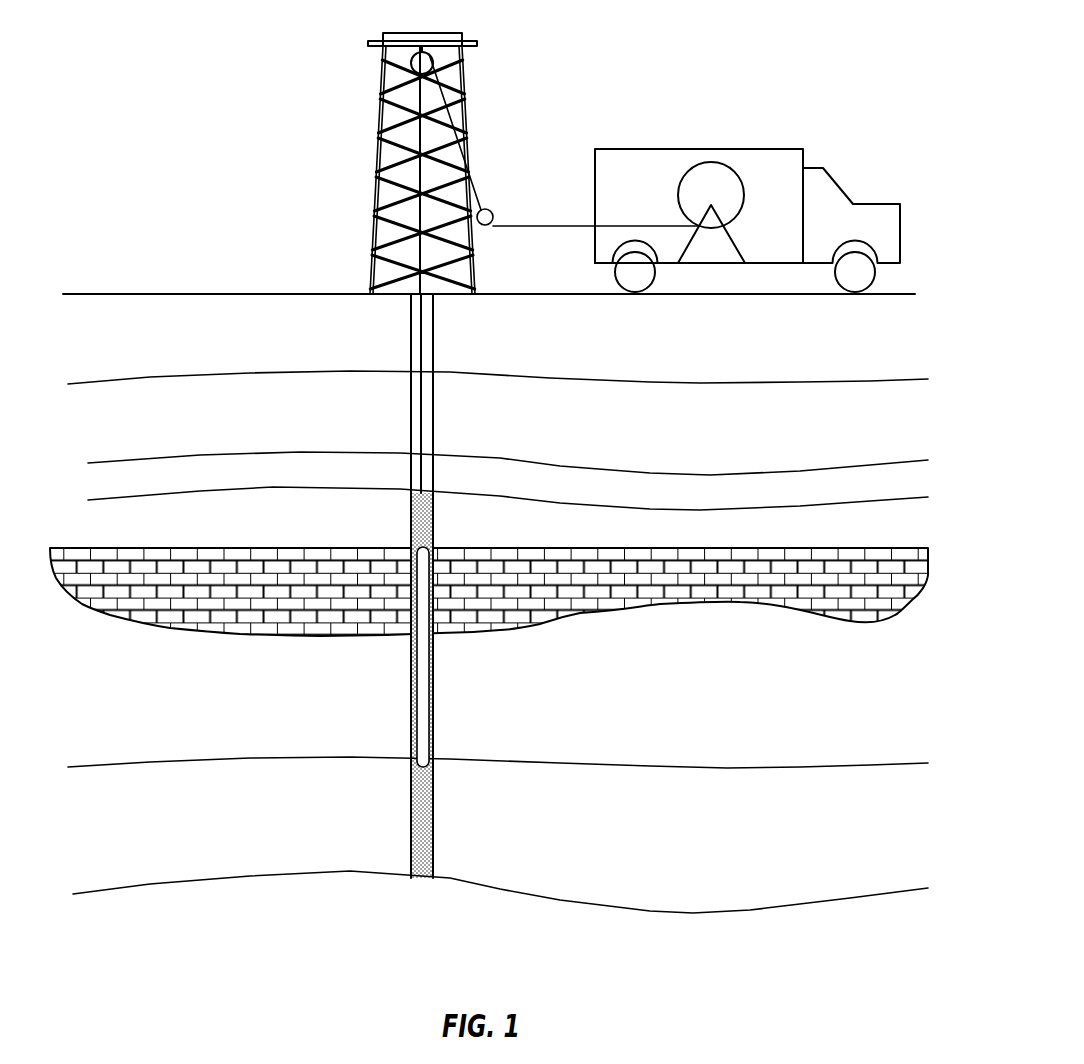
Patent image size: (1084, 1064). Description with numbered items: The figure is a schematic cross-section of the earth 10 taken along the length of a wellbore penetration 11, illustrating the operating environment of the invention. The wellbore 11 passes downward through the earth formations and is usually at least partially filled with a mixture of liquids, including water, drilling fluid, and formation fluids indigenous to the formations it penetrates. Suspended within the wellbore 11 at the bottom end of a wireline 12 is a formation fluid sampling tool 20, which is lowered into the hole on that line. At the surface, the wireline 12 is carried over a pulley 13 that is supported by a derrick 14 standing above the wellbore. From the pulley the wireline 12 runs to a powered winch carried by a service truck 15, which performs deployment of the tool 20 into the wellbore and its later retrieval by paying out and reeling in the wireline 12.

The earth 10 is at (727, 442).
The wellbore penetration 11 is at (424, 415).
The wireline 12 is at (428, 447).
The pulley 13 is at (411, 57).
The derrick 14 is at (370, 240).
The service truck 15 is at (757, 157).
The formation fluid sampling tool 20 is at (423, 735).